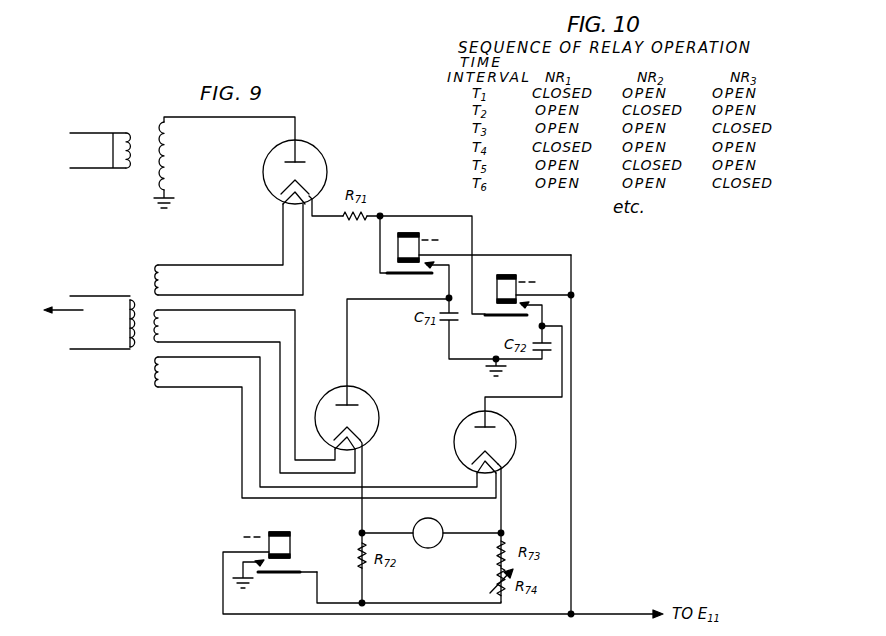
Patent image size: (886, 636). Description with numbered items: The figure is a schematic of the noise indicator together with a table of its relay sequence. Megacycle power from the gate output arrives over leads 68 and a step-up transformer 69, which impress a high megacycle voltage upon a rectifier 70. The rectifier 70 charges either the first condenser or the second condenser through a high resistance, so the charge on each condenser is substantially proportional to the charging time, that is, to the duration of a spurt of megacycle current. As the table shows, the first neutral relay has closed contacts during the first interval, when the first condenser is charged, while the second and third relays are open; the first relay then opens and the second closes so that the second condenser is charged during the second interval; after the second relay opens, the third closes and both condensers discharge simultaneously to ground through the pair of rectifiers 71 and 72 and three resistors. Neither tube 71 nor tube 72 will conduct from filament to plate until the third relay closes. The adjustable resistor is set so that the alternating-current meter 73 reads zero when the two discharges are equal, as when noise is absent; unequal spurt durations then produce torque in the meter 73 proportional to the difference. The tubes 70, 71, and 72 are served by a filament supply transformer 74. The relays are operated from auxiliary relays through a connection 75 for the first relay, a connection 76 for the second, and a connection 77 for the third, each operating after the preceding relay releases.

The leads 68 is at (108, 132).
The step-up transformer 69 is at (147, 126).
The rectifier 70 is at (318, 162).
The rectifier 71 is at (374, 411).
The rectifier 72 is at (508, 428).
The A.C. meter 73 is at (439, 526).
The filament supply transformer 74 is at (153, 346).
The connection 75 is at (426, 233).
The connection 76 is at (517, 277).
The connection 77 is at (268, 532).